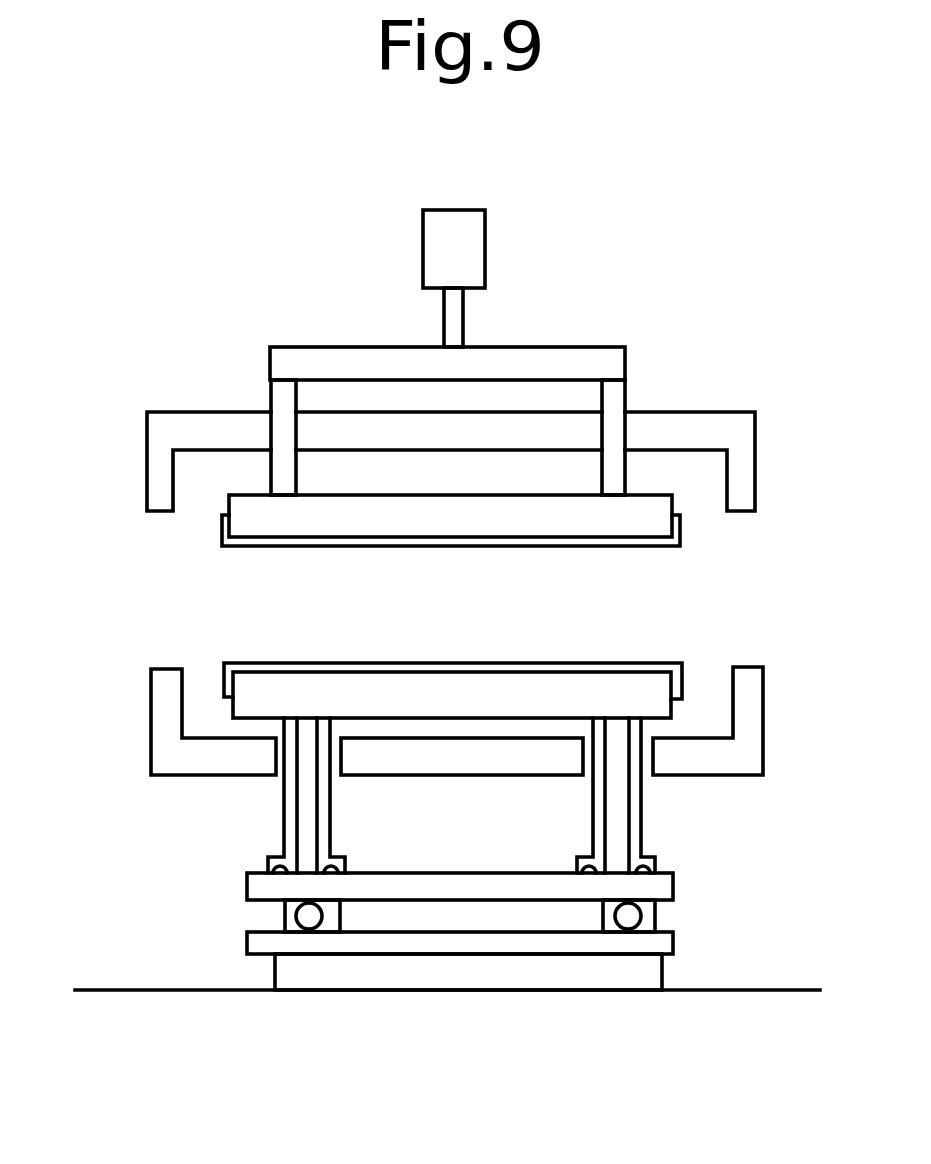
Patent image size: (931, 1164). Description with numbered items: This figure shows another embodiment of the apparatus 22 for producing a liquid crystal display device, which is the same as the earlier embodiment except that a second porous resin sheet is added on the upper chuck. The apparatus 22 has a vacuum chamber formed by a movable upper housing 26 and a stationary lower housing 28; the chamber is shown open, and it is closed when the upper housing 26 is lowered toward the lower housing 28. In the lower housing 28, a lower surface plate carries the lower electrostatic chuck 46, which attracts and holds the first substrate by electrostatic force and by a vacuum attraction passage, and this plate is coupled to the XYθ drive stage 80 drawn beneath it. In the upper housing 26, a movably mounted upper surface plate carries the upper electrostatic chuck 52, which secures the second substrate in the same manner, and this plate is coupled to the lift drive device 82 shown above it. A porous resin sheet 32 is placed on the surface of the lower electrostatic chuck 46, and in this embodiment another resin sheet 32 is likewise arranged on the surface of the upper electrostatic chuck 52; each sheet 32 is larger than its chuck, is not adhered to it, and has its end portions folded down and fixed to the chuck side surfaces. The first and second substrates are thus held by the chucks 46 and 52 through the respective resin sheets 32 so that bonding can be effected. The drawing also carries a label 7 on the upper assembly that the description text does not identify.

The apparatus for producing the liquid crystal display device 22 is at (583, 266).
The lift drive device 82 is at (432, 252).
The upper frame with support posts 7 is at (618, 397).
The movable upper housing 26 is at (180, 425).
The upper electrostatic chuck 52 is at (632, 520).
The porous resin sheet 32 is at (220, 537).
The lower electrostatic chuck 46 is at (510, 692).
The stationary lower housing 28 is at (165, 727).
The XYθ drive stage 80 is at (673, 890).